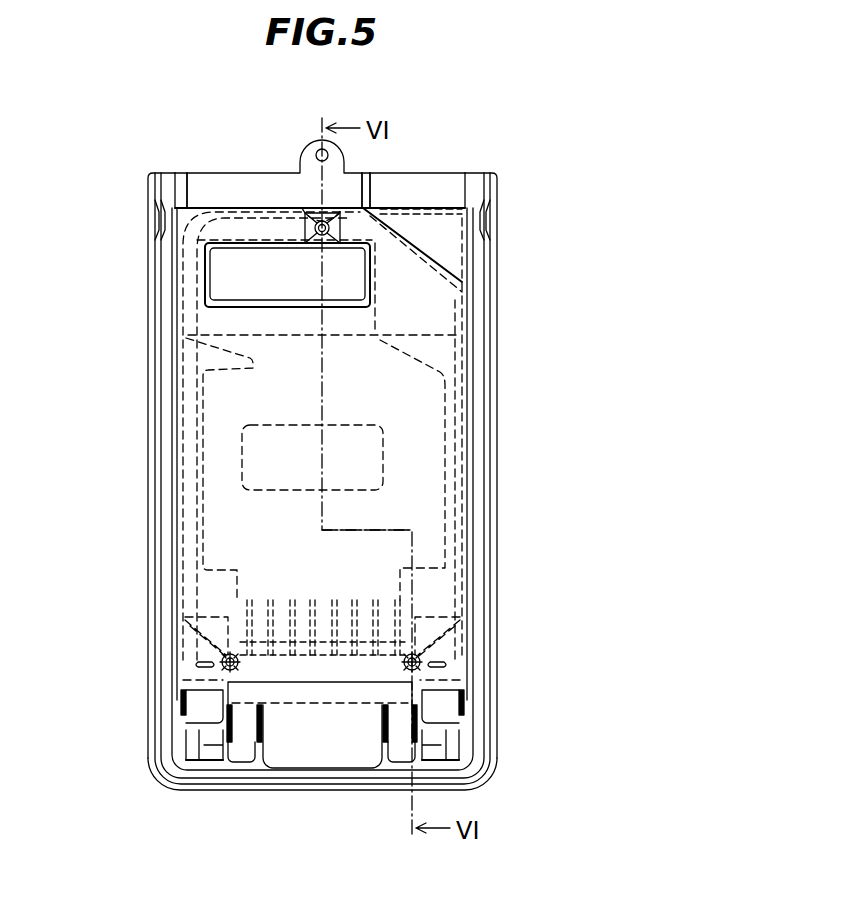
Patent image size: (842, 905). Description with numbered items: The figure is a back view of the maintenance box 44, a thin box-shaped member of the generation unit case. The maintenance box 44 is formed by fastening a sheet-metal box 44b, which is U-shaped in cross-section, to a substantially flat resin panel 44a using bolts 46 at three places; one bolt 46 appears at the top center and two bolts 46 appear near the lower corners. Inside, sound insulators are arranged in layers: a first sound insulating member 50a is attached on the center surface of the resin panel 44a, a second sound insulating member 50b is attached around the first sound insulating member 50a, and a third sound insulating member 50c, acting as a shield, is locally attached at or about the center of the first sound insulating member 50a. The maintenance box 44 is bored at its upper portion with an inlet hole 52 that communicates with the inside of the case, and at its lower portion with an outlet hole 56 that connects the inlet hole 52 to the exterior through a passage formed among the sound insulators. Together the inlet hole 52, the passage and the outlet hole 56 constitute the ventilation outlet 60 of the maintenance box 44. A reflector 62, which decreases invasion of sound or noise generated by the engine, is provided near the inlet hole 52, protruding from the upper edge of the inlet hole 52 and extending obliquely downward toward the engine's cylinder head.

The maintenance box 44 is at (578, 131).
The resin panel 44a is at (477, 220).
The sheet-metal box 44b is at (440, 182).
The bolts 46 is at (348, 228).
The first sound insulating member 50a is at (385, 524).
The second sound insulating member 50b is at (414, 355).
The third sound insulating member 50c is at (256, 492).
The inlet hole 52 is at (253, 320).
The outlet hole 56 is at (263, 647).
The ventilation outlet 60 is at (322, 725).
The reflector 62 is at (298, 287).